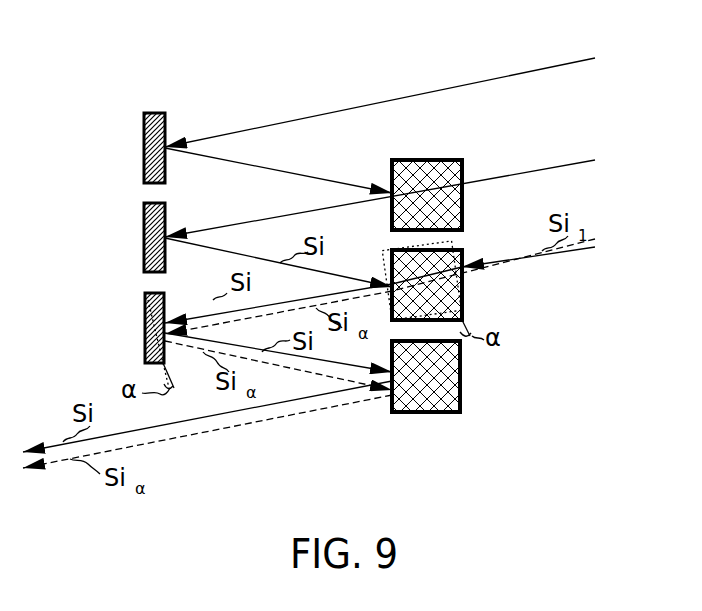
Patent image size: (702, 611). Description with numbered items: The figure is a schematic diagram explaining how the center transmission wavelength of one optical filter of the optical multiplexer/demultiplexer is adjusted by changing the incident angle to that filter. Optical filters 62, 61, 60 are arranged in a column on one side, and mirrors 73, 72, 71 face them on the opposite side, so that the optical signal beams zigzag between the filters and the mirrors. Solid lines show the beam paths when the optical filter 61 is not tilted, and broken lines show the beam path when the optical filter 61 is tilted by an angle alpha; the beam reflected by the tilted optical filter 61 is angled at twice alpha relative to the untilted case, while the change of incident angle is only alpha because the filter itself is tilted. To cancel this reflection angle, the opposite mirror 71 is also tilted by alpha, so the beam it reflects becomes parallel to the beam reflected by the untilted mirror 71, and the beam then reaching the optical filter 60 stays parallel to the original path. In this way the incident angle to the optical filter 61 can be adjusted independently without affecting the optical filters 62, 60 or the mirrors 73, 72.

The mirror 73 is at (143, 160).
The mirror 72 is at (143, 250).
The mirror 71 is at (143, 340).
The optical filter 62 is at (464, 212).
The optical filter 61 is at (464, 282).
The optical filter 60 is at (462, 392).